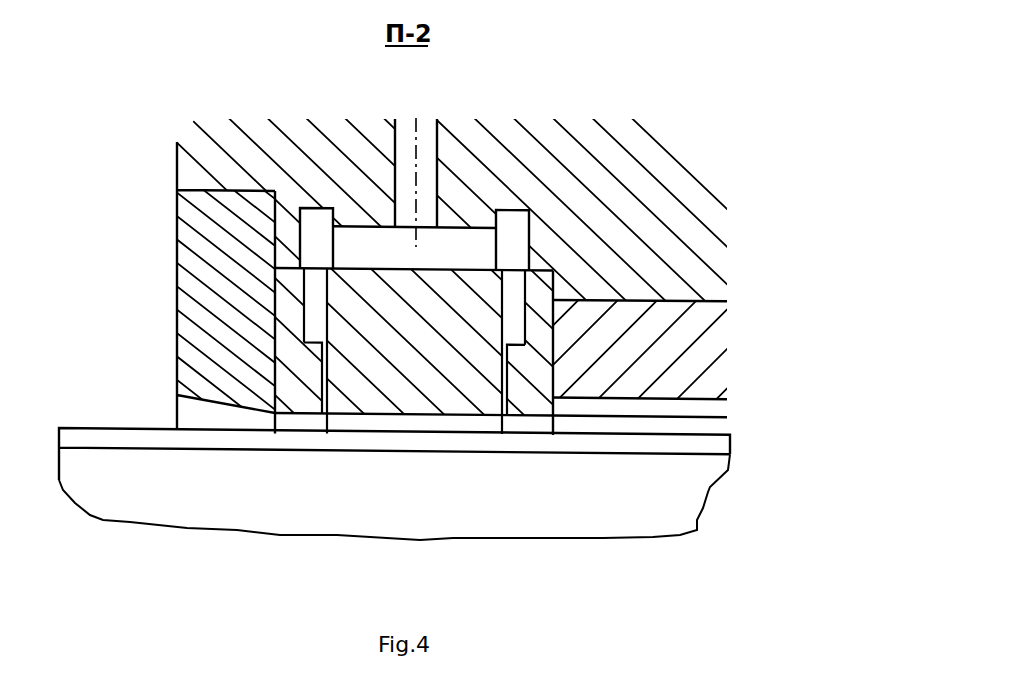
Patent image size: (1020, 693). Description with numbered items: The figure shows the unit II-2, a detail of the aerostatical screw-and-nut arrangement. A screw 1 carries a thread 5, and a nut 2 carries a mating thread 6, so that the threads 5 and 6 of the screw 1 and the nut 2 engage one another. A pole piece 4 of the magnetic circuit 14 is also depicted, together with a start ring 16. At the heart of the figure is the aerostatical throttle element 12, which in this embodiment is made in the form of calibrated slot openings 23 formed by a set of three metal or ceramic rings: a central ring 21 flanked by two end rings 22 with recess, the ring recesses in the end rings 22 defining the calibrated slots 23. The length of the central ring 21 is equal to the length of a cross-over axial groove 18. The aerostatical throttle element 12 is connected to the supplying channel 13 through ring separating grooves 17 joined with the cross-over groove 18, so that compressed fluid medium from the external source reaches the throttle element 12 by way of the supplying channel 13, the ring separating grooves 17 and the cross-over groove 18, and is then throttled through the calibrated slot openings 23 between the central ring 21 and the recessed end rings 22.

The screw 1 is at (698, 497).
The nut 2 is at (177, 252).
The pole piece 4 is at (667, 357).
The thread of the screw 5 is at (115, 437).
The thread of the nut 6 is at (590, 403).
The aerostatical throttle element 12 is at (272, 348).
The supplying channel 13 is at (403, 210).
The magnetic circuit 14 is at (618, 200).
The start ring 16 is at (200, 334).
The ring separating grooves 17 is at (312, 233).
The cross-over groove 18 is at (467, 240).
The central ring 21 is at (421, 372).
The rings with recess 22 is at (292, 380).
The calibrated slot openings 23 is at (320, 400).